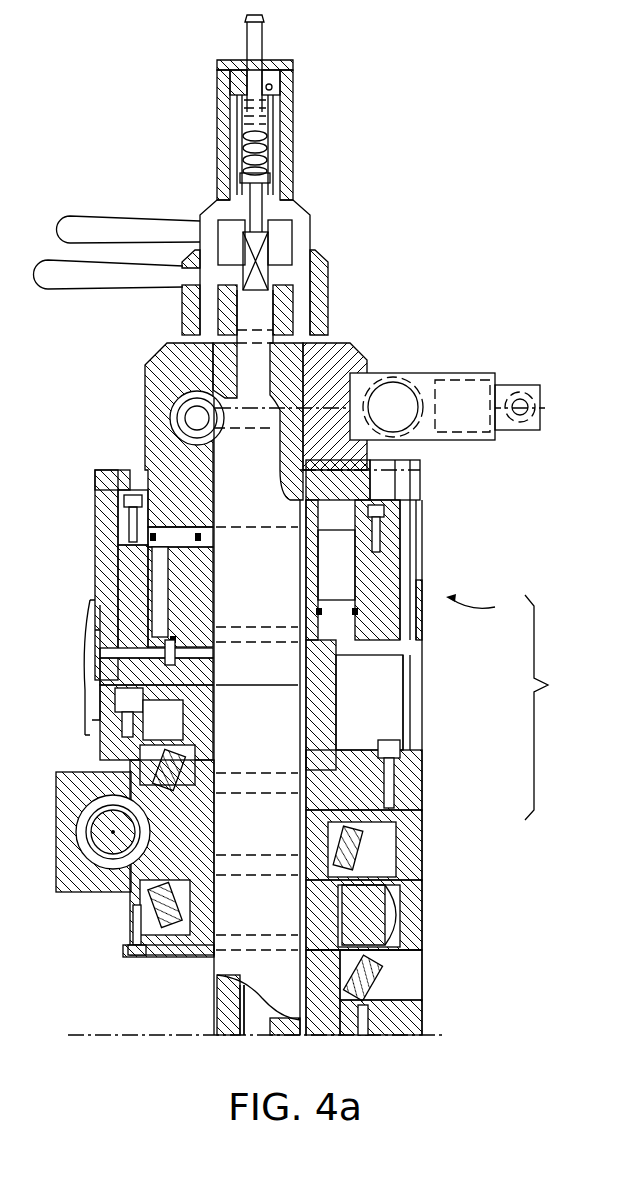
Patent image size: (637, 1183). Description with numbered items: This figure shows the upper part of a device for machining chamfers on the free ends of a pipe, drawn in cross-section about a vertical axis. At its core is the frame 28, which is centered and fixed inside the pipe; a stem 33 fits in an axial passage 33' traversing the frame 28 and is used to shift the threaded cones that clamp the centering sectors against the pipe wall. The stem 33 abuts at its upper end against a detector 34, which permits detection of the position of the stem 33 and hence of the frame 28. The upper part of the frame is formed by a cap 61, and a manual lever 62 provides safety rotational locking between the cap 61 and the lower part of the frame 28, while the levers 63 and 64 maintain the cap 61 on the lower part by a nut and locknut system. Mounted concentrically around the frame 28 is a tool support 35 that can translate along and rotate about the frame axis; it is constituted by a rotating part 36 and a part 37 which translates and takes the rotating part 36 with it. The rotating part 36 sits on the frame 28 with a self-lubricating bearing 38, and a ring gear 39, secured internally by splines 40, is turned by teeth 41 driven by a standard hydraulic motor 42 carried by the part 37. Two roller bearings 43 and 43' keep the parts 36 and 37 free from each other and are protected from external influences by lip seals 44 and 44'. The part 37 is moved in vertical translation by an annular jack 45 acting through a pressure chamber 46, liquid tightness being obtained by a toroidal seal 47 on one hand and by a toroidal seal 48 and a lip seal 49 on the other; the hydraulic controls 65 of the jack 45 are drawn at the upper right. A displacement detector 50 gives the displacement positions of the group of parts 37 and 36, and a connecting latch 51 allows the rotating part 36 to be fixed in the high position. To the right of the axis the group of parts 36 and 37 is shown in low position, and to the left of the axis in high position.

The frame 28 is at (215, 1011).
The stem 33 is at (232, 1005).
The axial passage 33' is at (222, 1026).
The detector 34 is at (283, 222).
The tool support 35 is at (554, 707).
The rotating part 36 is at (395, 864).
The translating part 37 is at (484, 606).
The self-lubricating bearing 38 is at (355, 805).
The ring gear 39 is at (400, 892).
The splines 40 is at (412, 943).
The teeth 41 is at (392, 923).
The hydraulic motor 42 is at (98, 837).
The roller bearing 43 is at (254, 804).
The roller bearing 43' is at (266, 945).
The lip seal 44 is at (364, 760).
The lip seal 44' is at (381, 1033).
The annular jack 45 is at (338, 693).
The pressure chamber 46 is at (385, 565).
The toroidal seal 47 is at (355, 608).
The toroidal seal 48 is at (168, 632).
The lip seal 49 is at (178, 658).
The displacement detector 50 is at (418, 500).
The connecting latch 51 is at (88, 630).
The cap 61 is at (162, 380).
The manual lever 62 is at (190, 418).
The lever 63 is at (71, 228).
The lever 64 is at (46, 272).
The hydraulic controls 65 is at (408, 383).